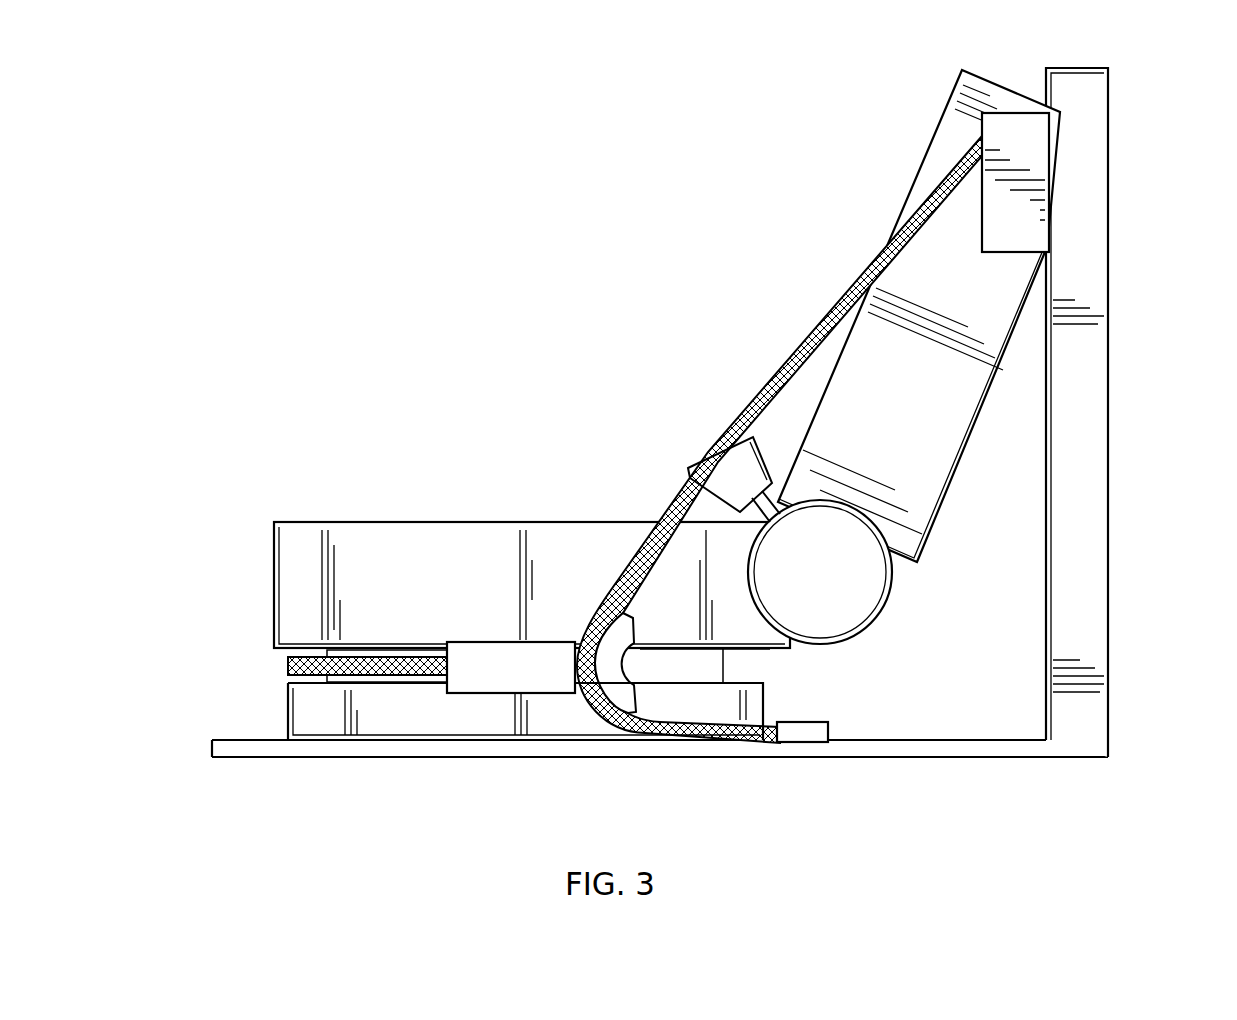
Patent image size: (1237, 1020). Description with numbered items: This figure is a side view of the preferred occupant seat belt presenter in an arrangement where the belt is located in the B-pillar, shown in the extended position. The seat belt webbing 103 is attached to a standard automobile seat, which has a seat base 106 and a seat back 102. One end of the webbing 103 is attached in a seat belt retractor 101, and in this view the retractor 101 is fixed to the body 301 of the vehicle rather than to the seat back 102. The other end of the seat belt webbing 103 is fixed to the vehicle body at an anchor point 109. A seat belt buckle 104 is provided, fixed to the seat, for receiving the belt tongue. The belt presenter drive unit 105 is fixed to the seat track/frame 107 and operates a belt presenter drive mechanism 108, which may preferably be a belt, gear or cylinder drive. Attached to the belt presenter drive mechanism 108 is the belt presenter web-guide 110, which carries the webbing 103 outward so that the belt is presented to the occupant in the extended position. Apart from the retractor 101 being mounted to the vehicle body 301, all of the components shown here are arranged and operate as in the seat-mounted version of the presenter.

The seat belt retractor 101 is at (1023, 172).
The seat back 102 is at (928, 338).
The seat belt webbing 103 is at (790, 372).
The seat belt buckle 104 is at (722, 465).
The belt presenter drive unit 105 is at (478, 655).
The seat base 106 is at (322, 533).
The seat track/frame 107 is at (474, 724).
The belt presenter drive mechanism 108 is at (383, 683).
The anchor point 109 is at (805, 735).
The belt presenter web-guide 110 is at (620, 664).
The body of the vehicle 301 is at (1098, 742).